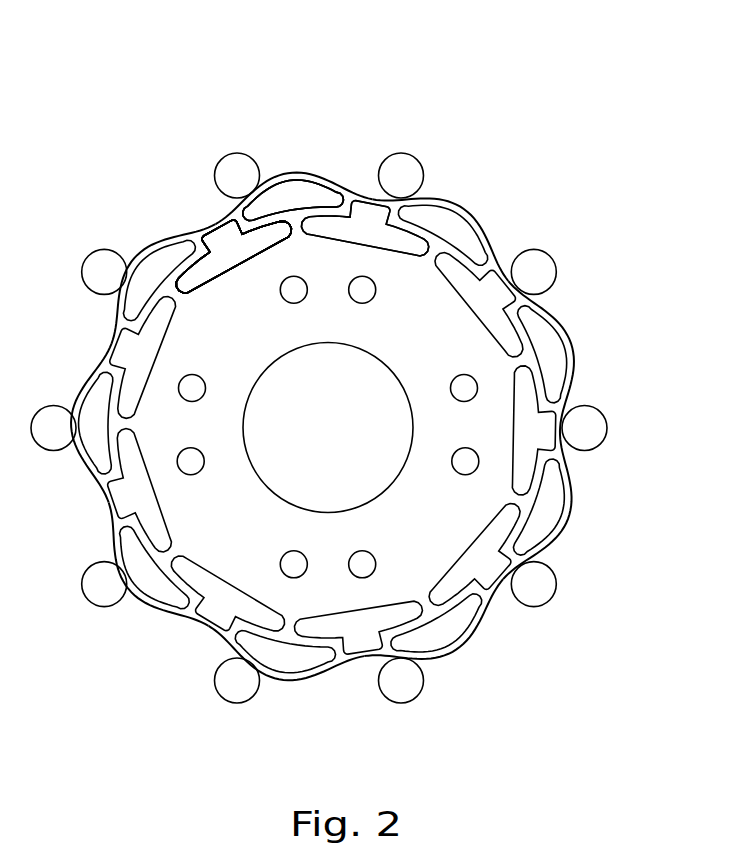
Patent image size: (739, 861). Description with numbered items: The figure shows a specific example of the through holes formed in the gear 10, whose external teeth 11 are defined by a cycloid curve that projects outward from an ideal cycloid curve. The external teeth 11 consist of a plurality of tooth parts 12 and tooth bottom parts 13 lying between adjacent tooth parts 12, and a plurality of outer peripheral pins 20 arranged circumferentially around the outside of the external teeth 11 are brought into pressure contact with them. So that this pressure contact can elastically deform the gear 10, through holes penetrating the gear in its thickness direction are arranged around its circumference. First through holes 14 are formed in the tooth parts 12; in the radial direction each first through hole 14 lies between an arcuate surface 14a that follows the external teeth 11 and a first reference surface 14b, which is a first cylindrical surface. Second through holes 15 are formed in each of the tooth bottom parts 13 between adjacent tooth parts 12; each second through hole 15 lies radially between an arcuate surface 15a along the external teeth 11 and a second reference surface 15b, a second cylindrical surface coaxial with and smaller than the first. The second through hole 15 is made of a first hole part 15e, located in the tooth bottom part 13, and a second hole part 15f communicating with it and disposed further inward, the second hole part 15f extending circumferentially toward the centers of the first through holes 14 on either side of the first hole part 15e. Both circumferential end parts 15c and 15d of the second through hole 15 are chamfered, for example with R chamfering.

The gear 10 is at (313, 80).
The external teeth 11 is at (138, 115).
The tooth parts 12 is at (140, 257).
The tooth bottom parts 13 is at (200, 238).
The first through hole 14 is at (388, 144).
The arcuate surface 14a is at (297, 187).
The first reference surface 14b is at (313, 210).
The second through hole 15 is at (265, 363).
The arcuate surface 15a is at (208, 238).
The second reference surface 15b is at (235, 252).
The end part 15c is at (183, 292).
The end part 15d is at (253, 243).
The first hole part 15e is at (203, 243).
The second hole part 15f is at (296, 278).
The outer peripheral pins 20 is at (223, 160).